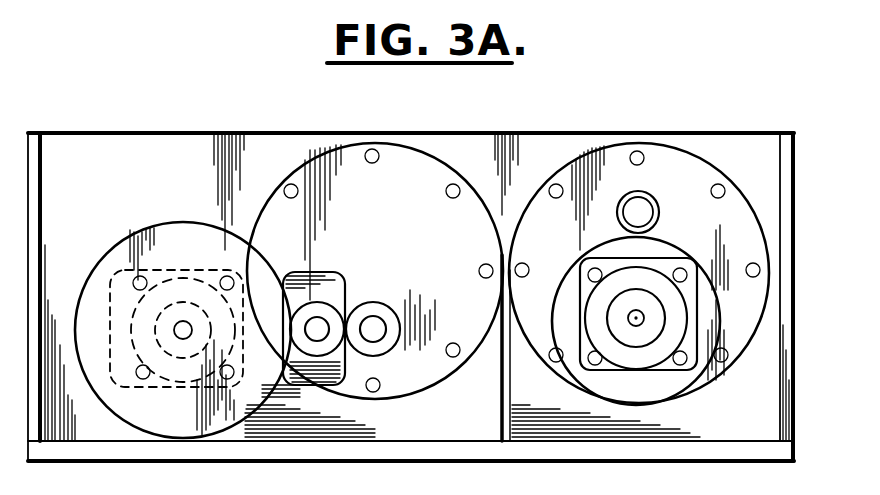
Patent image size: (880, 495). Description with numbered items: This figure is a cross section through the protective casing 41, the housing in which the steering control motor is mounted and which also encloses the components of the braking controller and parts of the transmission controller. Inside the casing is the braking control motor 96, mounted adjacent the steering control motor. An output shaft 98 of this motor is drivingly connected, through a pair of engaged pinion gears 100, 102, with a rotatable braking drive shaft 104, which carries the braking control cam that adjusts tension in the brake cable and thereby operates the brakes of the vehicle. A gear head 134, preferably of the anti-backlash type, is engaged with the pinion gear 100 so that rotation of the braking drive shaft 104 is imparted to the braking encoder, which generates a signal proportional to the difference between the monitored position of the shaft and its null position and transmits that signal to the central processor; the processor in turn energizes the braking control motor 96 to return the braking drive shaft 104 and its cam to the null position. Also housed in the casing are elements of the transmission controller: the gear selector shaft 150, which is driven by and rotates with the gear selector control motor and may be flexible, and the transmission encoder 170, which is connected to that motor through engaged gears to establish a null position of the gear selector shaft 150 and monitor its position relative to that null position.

The protective casing 41 is at (796, 241).
The braking control motor 96 is at (384, 208).
The output shaft 98 is at (317, 334).
The pinion gear 100 is at (328, 303).
The pinion gear 102 is at (393, 299).
The braking drive shaft 104 is at (374, 331).
The gear head 134 is at (144, 228).
The gear selector shaft 150 is at (639, 211).
The transmission encoder 170 is at (658, 350).